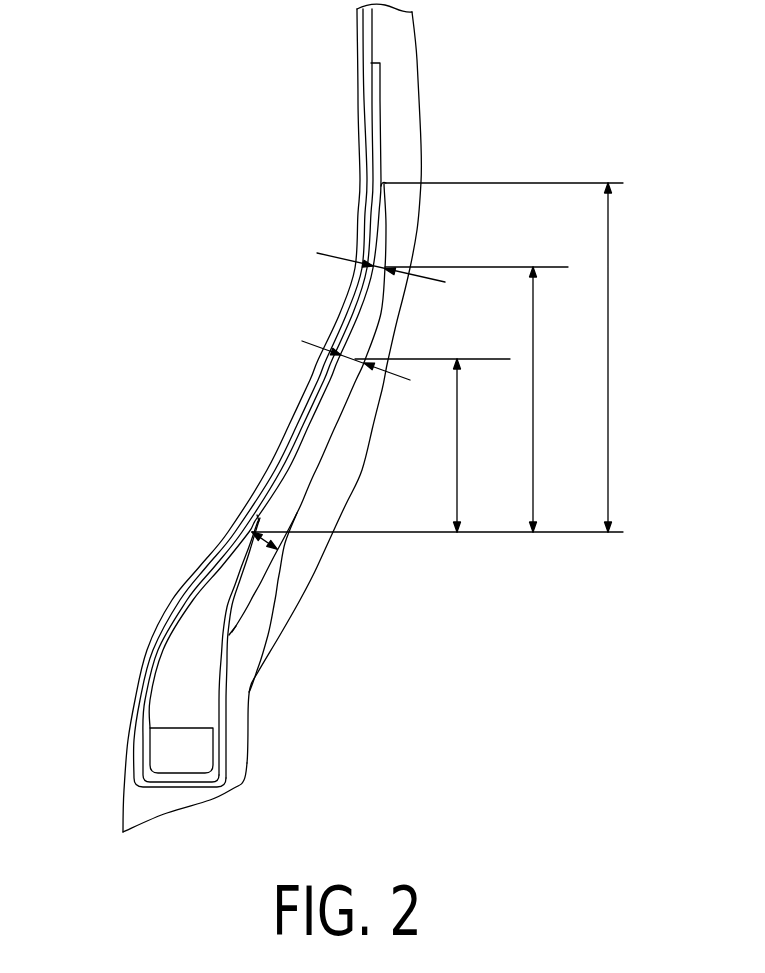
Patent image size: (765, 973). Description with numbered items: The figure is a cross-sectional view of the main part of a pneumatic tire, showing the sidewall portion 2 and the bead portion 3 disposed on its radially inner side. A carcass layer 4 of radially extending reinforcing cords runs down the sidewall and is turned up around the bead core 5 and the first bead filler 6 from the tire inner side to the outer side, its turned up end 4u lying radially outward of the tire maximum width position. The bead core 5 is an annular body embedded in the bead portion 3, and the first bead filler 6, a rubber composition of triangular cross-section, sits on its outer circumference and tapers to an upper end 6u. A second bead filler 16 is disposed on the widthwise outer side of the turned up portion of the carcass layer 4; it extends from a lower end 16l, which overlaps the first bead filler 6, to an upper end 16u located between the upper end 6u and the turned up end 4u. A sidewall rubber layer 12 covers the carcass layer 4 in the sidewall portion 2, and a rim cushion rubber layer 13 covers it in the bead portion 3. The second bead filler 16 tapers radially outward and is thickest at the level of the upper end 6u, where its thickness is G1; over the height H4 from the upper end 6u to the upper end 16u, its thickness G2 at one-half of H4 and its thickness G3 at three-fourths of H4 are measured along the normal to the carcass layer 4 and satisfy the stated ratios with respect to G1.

The sidewall portion 2 is at (420, 93).
The bead portion 3 is at (246, 767).
The carcass layer 4 is at (314, 403).
The turned up end of carcass layer 4u is at (371, 63).
The bead core 5 is at (172, 757).
The first bead filler 6 is at (189, 651).
The upper end of first bead filler 6u is at (243, 524).
The sidewall rubber layer 12 is at (407, 148).
The rim cushion rubber layer 13 is at (236, 717).
The second bead filler 16 is at (308, 462).
The upper end of second bead filler 16u is at (380, 181).
The lower end of second bead filler 16l is at (229, 633).
The thickness of second bead filler at upper end of first bead filler G1 is at (258, 528).
The thickness of second bead filler at one-half of height H4 G2 is at (339, 349).
The thickness of second bead filler at three-fourths of height H4 G3 is at (366, 256).
The height from upper end of first bead filler to upper end of second bead filler H4 is at (444, 357).